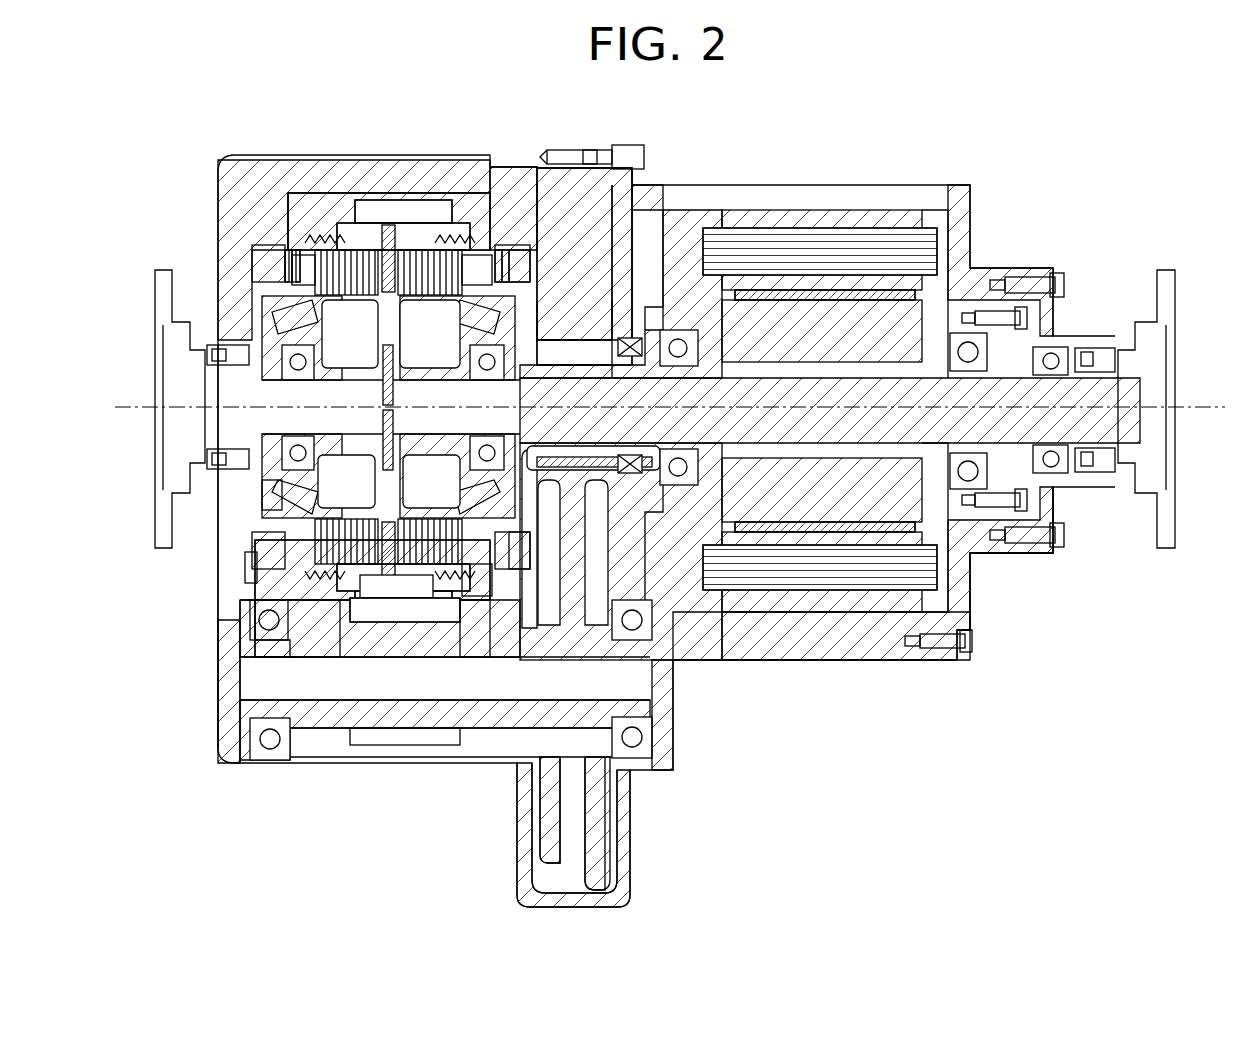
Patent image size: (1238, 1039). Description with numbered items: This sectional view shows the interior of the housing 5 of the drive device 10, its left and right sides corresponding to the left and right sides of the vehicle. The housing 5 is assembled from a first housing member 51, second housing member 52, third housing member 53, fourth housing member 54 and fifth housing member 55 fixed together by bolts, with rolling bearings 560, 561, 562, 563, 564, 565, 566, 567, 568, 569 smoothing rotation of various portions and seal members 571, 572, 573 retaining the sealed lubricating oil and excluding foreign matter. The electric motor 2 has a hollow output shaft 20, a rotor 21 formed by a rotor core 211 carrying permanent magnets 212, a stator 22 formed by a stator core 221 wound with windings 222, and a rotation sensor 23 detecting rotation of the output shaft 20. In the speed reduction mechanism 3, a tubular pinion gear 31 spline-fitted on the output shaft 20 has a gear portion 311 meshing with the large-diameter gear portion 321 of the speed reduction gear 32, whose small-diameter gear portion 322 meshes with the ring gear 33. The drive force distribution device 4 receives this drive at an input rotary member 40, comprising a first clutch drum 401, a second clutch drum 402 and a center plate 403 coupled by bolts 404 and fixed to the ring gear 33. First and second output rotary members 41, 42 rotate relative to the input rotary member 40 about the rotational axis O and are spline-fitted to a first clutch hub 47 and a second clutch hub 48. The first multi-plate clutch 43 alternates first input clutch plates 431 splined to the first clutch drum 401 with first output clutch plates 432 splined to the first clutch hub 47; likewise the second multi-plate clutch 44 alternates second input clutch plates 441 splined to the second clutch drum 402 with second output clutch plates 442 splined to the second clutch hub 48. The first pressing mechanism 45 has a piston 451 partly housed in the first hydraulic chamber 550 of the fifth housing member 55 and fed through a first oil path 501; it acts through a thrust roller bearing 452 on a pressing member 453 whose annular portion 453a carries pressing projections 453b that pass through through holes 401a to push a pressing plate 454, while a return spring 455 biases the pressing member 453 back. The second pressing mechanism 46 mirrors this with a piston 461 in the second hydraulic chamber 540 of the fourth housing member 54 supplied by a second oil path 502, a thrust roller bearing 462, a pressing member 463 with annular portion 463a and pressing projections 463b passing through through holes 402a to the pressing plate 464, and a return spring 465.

The drive device 10 is at (1046, 146).
The electric motor 2 is at (750, 210).
The output shaft 20 is at (718, 456).
The rotor 21 is at (1062, 190).
The rotor core 211 is at (915, 305).
The permanent magnets 212 is at (935, 292).
The stator 22 is at (952, 120).
The stator core 221 is at (810, 232).
The windings 222 is at (855, 258).
The rotation sensor 23 is at (1012, 352).
The speed reduction mechanism 3 is at (624, 835).
The pinion gear 31 is at (597, 365).
The gear portion 311 is at (598, 350).
The speed reduction gear 32 is at (650, 712).
The large-diameter gear portion 321 is at (600, 888).
The small-diameter gear portion 322 is at (455, 738).
The ring gear 33 is at (432, 620).
The drive force distribution device 4 is at (338, 605).
The input rotary member 40 is at (368, 605).
The first clutch drum 401 is at (410, 208).
The through holes 401a is at (490, 600).
The second clutch drum 402 is at (345, 215).
The through holes 402a is at (250, 572).
The center plate 403 is at (387, 225).
The bolts 404 is at (402, 622).
The first output rotary member 41 is at (1172, 445).
The second output rotary member 42 is at (185, 430).
The first multi-plate clutch 43 is at (438, 503).
The first input clutch plates 431 is at (478, 366).
The first output clutch plates 432 is at (472, 318).
The second multi-plate clutch 44 is at (350, 502).
The second input clutch plates 441 is at (300, 365).
The second output clutch plates 442 is at (305, 318).
The first pressing mechanism 45 is at (470, 600).
The piston 451 is at (540, 232).
The thrust roller bearing 452 is at (533, 262).
The pressing member 453 is at (584, 75).
The annular portion 453a is at (510, 262).
The pressing projections 453b is at (503, 258).
The pressing plate 454 is at (456, 238).
The return spring 455 is at (452, 255).
The second pressing mechanism 46 is at (305, 600).
The piston 461 is at (284, 268).
The thrust roller bearing 462 is at (258, 256).
The pressing member 463 is at (178, 72).
The annular portion 463a is at (287, 268).
The pressing projections 463b is at (296, 262).
The pressing plate 464 is at (322, 236).
The return spring 465 is at (305, 255).
The first clutch hub 47 is at (440, 448).
The second clutch hub 48 is at (335, 448).
The housing 5 is at (731, 668).
The first oil path 501 is at (520, 570).
The second oil path 502 is at (258, 548).
The first housing member 51 is at (1090, 476).
The second housing member 52 is at (972, 612).
The third housing member 53 is at (772, 662).
The fourth housing member 54 is at (222, 722).
The second hydraulic chamber 540 is at (262, 278).
The fifth housing member 55 is at (522, 305).
The first hydraulic chamber 550 is at (527, 272).
The rolling bearing 560 is at (386, 375).
The rolling bearing 561 is at (1055, 474).
The rolling bearing 562 is at (968, 480).
The rolling bearing 563 is at (676, 330).
The rolling bearing 564 is at (500, 380).
The rolling bearing 565 is at (480, 380).
The rolling bearing 566 is at (215, 468).
The rolling bearing 567 is at (268, 485).
The rolling bearing 568 is at (640, 760).
The rolling bearing 569 is at (254, 742).
The seal member 571 is at (1112, 346).
The seal member 572 is at (207, 355).
The seal member 573 is at (622, 338).
The rotational axis O is at (132, 406).